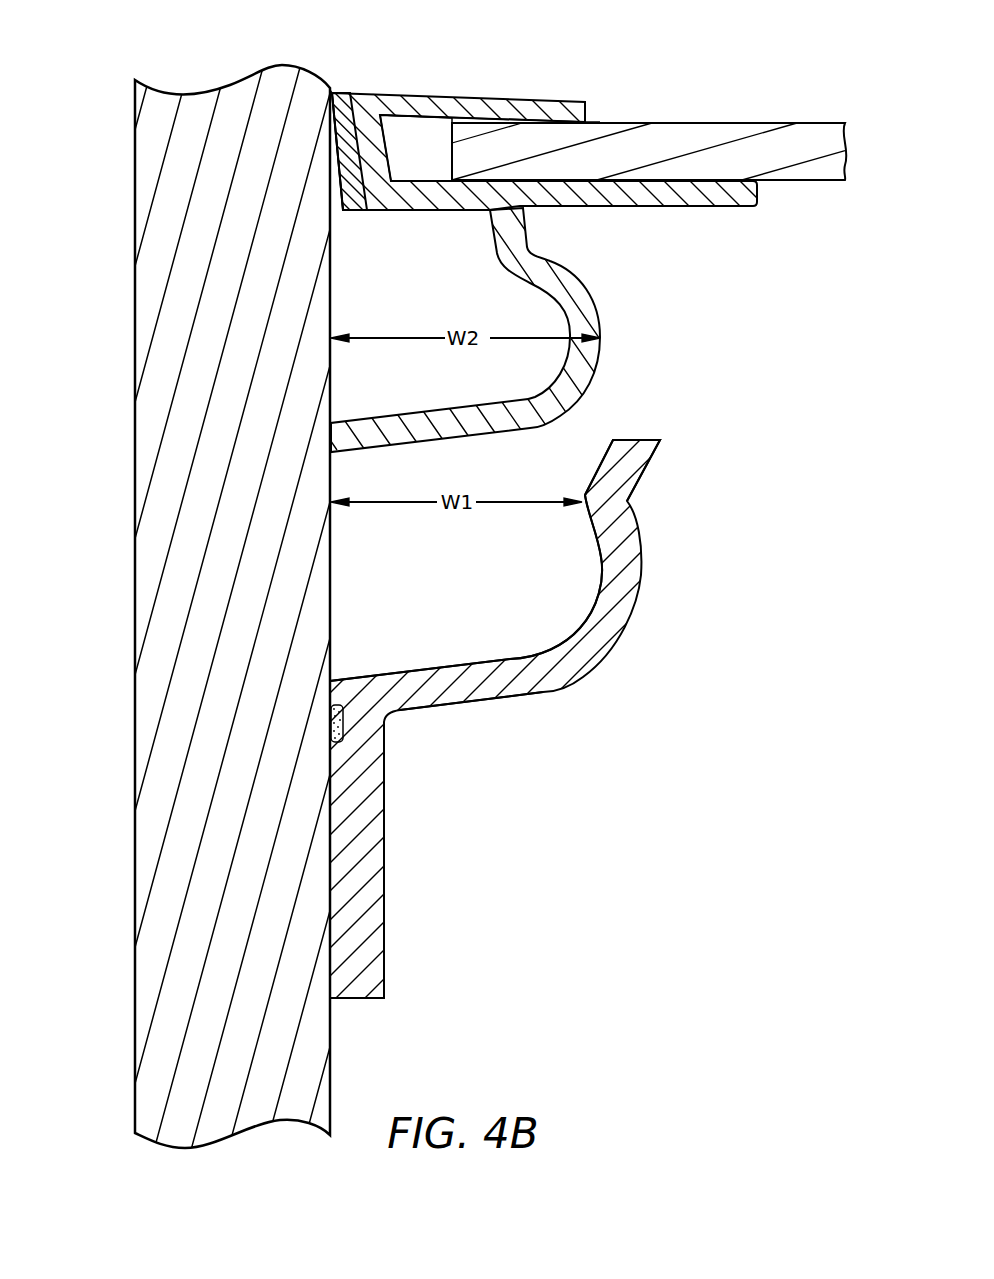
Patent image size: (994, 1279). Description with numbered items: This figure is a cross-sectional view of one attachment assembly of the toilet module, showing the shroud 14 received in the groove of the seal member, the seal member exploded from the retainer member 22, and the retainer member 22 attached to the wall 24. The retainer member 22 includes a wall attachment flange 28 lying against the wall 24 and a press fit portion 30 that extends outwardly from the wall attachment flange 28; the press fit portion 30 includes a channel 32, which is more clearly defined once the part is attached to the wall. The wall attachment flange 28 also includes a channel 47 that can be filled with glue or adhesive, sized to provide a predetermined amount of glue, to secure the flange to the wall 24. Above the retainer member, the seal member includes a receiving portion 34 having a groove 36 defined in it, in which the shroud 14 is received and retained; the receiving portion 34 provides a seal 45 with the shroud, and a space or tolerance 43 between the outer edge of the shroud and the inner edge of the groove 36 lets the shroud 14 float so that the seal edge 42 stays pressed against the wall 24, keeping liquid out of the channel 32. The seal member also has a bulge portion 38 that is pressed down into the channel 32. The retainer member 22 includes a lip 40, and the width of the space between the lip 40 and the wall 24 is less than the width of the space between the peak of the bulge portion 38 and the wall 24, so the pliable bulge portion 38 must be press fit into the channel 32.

The shroud 14 is at (688, 137).
The retainer member 22 is at (461, 690).
The wall 24 is at (307, 114).
The wall attachment flange 28 is at (384, 862).
The press fit portion 30 is at (640, 567).
The channel 32 is at (593, 617).
The receiving portion 34 is at (443, 100).
The groove 36 is at (494, 120).
The bulge portion 38 is at (600, 328).
The lip 40 is at (583, 503).
The seal edge 42 is at (329, 93).
The space or tolerance 43 is at (413, 145).
The seal 45 is at (587, 122).
The channel 47 is at (340, 733).